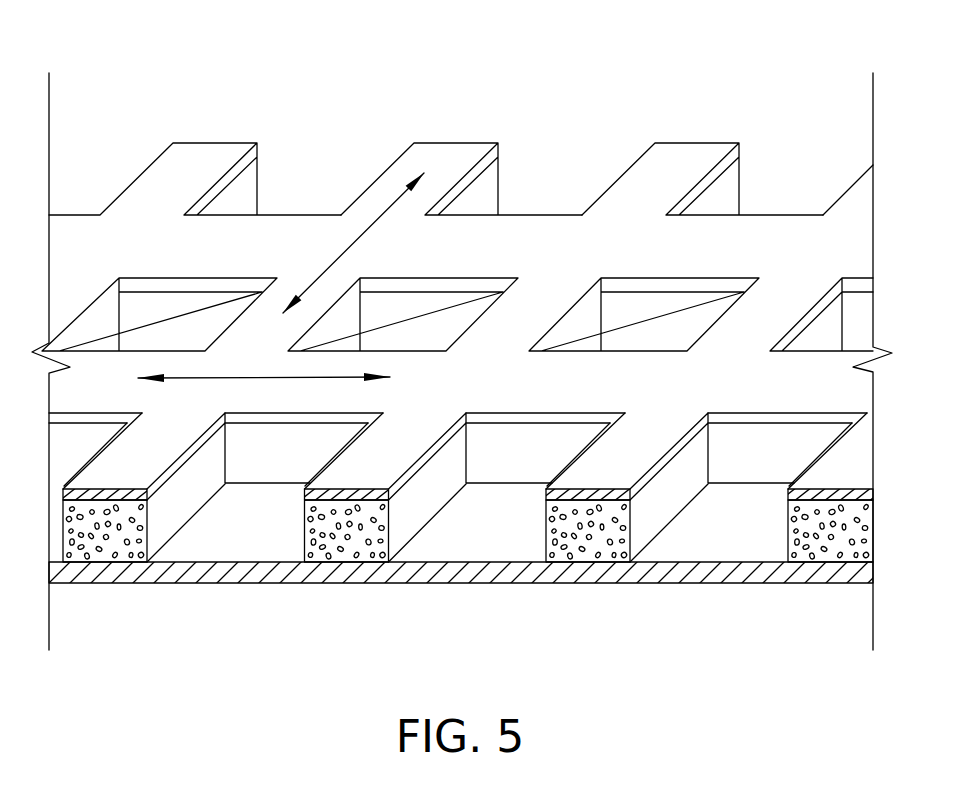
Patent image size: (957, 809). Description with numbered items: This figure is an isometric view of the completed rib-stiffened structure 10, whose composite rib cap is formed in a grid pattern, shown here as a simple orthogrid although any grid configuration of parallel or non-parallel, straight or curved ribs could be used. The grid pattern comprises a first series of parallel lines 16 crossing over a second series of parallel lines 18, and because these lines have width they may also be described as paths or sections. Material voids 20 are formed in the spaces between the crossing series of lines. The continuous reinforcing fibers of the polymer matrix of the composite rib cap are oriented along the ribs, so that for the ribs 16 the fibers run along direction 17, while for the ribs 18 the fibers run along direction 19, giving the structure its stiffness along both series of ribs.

The rib-stiffened structure 10 is at (772, 112).
The first series of parallel lines 16 is at (203, 160).
The fiber direction for ribs 16 17 is at (355, 242).
The second series of parallel lines 18 is at (113, 373).
The fiber direction for ribs 18 19 is at (267, 378).
The material voids 20 is at (405, 318).